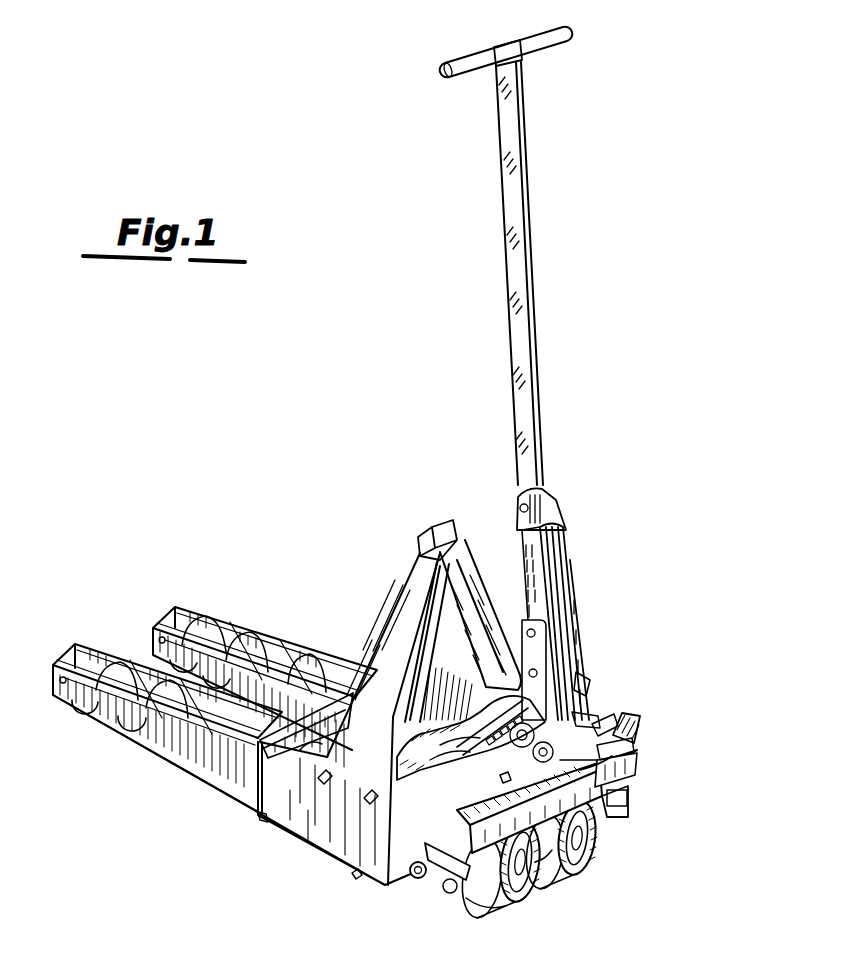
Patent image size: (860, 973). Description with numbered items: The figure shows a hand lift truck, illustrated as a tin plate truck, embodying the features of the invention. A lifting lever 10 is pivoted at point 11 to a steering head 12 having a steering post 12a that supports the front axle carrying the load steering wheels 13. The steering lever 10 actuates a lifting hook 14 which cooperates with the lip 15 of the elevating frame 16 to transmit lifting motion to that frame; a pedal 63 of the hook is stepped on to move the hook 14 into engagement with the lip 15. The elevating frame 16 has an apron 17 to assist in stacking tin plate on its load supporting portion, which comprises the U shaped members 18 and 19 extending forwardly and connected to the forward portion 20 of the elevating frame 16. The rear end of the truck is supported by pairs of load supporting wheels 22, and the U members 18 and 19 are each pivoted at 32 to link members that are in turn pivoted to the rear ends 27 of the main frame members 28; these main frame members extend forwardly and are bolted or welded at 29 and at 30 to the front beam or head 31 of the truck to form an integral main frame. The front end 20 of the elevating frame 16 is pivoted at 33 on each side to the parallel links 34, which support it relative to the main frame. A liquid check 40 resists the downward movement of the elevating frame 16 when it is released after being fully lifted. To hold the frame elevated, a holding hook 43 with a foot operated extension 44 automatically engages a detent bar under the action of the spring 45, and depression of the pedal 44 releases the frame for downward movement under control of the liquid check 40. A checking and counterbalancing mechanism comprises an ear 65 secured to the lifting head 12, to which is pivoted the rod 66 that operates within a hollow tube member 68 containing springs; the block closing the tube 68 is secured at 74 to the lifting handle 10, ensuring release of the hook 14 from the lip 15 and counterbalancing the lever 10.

The lifting lever 10 is at (527, 418).
The securing point 74 is at (521, 510).
The hollow tube member 68 is at (560, 568).
The liquid check 40 is at (420, 615).
The elevating frame 16 is at (370, 692).
The lip 15 is at (470, 705).
The pedal 63 is at (580, 678).
The rod 66 is at (586, 712).
The holding hook 43 is at (608, 720).
The pedal 44 is at (641, 722).
The spring 45 is at (634, 746).
The front beam 31 is at (636, 760).
The ear 65 is at (624, 778).
The attachment point 30 is at (628, 800).
The pivot point 11 is at (612, 816).
The steering head 12 is at (592, 826).
The load steering wheels 13 is at (592, 858).
The steering post 12a is at (574, 880).
The attachment point 29 is at (482, 912).
The parallel links 34 is at (446, 888).
The pivot 33 is at (412, 878).
The lifting hook 14 is at (472, 775).
The main frame members 28 is at (266, 720).
The forward portion of the elevating frame 20 is at (336, 844).
The apron 17 is at (302, 728).
The U shaped member 18 is at (55, 672).
The U shaped member 19 is at (200, 612).
The rear ends of the main frame members 27 is at (142, 665).
The load supporting wheels 22 is at (86, 716).
The pivot 32 is at (56, 690).